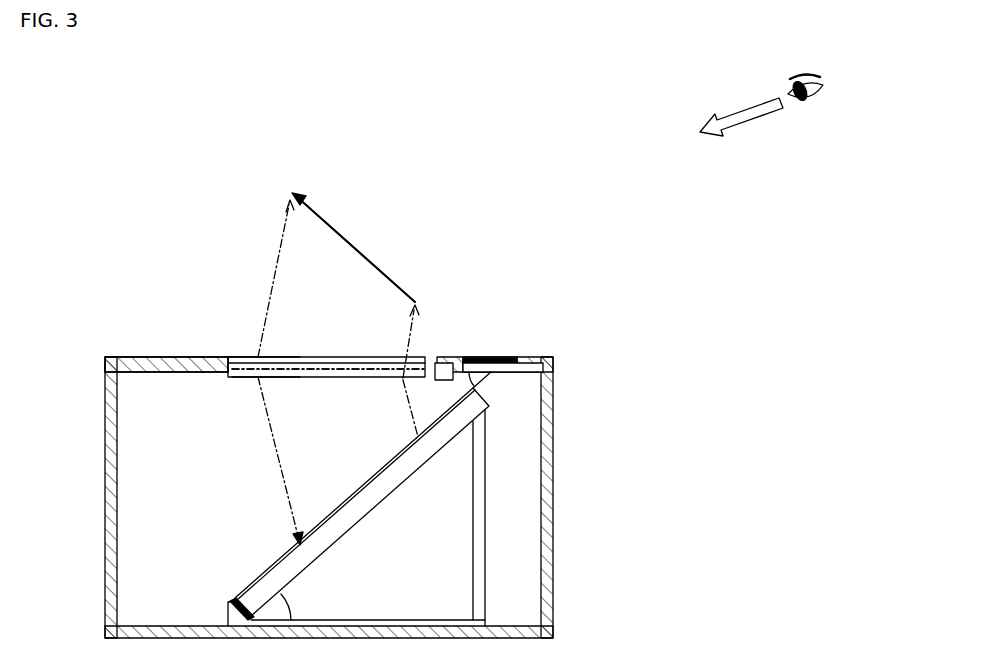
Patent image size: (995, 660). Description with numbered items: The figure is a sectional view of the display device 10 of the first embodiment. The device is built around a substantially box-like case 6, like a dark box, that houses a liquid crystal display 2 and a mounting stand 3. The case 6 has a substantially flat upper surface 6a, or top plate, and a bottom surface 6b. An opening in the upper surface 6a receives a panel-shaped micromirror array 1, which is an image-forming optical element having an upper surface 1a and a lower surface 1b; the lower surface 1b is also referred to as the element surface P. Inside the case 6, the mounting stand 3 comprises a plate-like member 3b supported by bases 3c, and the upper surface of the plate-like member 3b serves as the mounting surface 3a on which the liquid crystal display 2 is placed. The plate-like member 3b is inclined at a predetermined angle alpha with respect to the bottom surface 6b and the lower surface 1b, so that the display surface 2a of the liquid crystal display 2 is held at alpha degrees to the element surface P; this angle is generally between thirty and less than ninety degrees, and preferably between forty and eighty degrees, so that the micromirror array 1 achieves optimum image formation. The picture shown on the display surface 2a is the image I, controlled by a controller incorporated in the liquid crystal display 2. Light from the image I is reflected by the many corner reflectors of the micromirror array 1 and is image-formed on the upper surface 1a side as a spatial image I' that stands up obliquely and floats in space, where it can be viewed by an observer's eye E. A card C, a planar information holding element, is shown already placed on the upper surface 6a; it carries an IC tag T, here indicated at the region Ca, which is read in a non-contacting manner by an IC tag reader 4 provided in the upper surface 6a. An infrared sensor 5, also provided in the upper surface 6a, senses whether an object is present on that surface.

The micromirror array 1 is at (337, 357).
The upper surface of the micromirror array 1a is at (237, 357).
The lower surface of the micromirror array 1b is at (232, 378).
The liquid crystal display 2 is at (270, 554).
The display surface 2a is at (255, 575).
The mounting stand 3 is at (491, 490).
The mounting surface 3a is at (357, 523).
The plate-like member 3b is at (392, 506).
The bases 3c is at (473, 562).
The IC tag reader 4 is at (503, 372).
The infrared sensor 5 is at (446, 381).
The case 6 is at (560, 521).
The upper surface of the case 6a is at (177, 357).
The bottom surface of the case 6b is at (509, 626).
The display device 10 is at (604, 432).
The card C is at (146, 350).
The aperture Ca is at (428, 360).
The IC tag T is at (492, 360).
The element surface P is at (312, 378).
The eye of viewer E is at (761, 116).
The image I is at (338, 461).
The spatial image I' is at (338, 285).